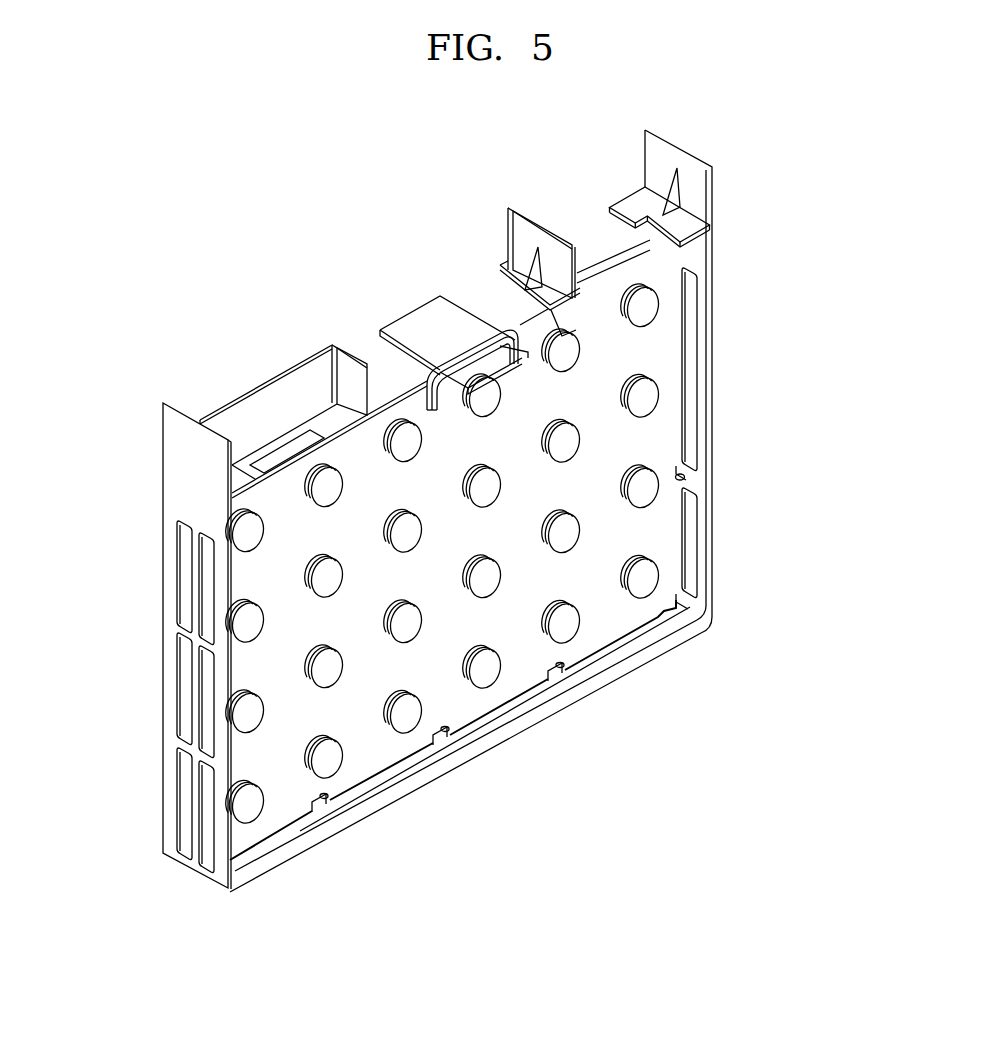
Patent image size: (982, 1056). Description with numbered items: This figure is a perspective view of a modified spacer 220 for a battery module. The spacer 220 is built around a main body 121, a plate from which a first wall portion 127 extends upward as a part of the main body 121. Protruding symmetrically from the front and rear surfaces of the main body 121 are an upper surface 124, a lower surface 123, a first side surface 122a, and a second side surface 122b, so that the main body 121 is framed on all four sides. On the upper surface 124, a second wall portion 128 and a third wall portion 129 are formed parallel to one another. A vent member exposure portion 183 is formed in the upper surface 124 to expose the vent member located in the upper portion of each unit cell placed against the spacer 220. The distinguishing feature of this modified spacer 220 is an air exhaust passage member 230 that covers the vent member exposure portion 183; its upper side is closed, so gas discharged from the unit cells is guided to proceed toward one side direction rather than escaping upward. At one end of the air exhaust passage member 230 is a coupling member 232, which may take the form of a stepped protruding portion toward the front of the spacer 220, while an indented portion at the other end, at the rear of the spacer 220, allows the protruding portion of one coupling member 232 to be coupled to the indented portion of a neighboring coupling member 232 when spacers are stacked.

The spacer 220 is at (170, 284).
The main body 121 is at (662, 438).
The first side surface 122a is at (166, 576).
The second side surface 122b is at (705, 340).
The lower surface 123 is at (503, 722).
The upper surface 124 is at (400, 408).
The first wall portion 127 is at (254, 388).
The second wall portion 128 is at (316, 329).
The third wall portion 129 is at (530, 216).
The vent member exposure portion 183 is at (453, 403).
The air exhaust passage member 230 is at (422, 322).
The coupling member 232 is at (500, 333).